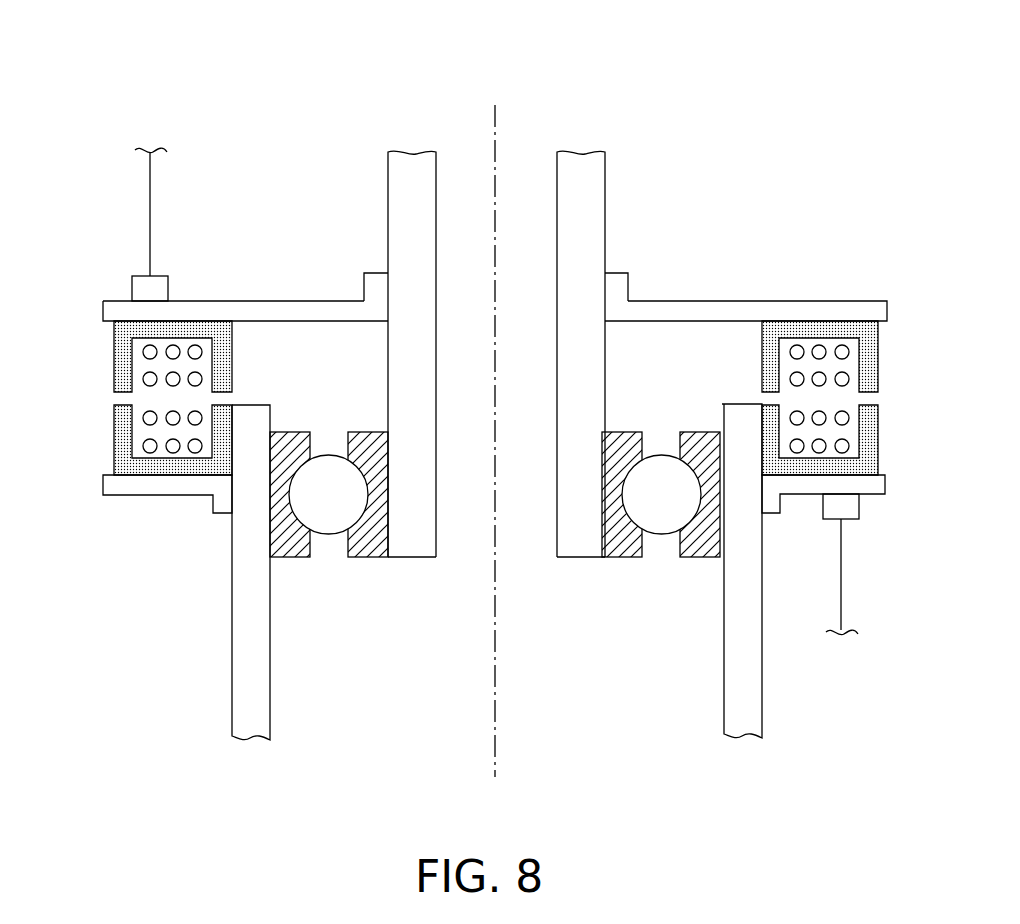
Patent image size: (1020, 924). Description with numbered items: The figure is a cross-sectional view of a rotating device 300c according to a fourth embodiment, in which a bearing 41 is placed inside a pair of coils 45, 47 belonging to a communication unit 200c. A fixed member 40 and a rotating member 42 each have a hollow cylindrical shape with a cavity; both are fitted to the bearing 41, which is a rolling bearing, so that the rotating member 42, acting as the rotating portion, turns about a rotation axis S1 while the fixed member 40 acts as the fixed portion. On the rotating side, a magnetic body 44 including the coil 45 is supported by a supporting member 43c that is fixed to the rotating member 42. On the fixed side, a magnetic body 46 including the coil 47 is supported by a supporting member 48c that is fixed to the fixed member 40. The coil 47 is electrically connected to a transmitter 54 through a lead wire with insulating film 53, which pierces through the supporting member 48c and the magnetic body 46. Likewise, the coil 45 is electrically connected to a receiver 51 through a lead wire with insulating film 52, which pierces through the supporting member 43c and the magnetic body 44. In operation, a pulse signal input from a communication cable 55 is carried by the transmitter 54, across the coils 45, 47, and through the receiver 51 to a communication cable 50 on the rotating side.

The fixed member 40 is at (262, 632).
The bearing 41 is at (289, 434).
The rotating member 42 is at (410, 558).
The supporting member 43c is at (108, 316).
The magnetic body 44 is at (127, 356).
The coil 45 is at (150, 380).
The magnetic body 46 is at (125, 441).
The coil 47 is at (150, 448).
The supporting member 48c is at (108, 490).
The communication cable 50 is at (152, 177).
The receiver 51 is at (158, 290).
The lead wire with insulating film 52 is at (148, 314).
The lead wire with insulating film 53 is at (844, 482).
The transmitter 54 is at (852, 504).
The communication cable 55 is at (842, 565).
The communication unit 200c is at (888, 222).
The rotating device 300c is at (605, 41).
The rotation axis S1 is at (497, 117).